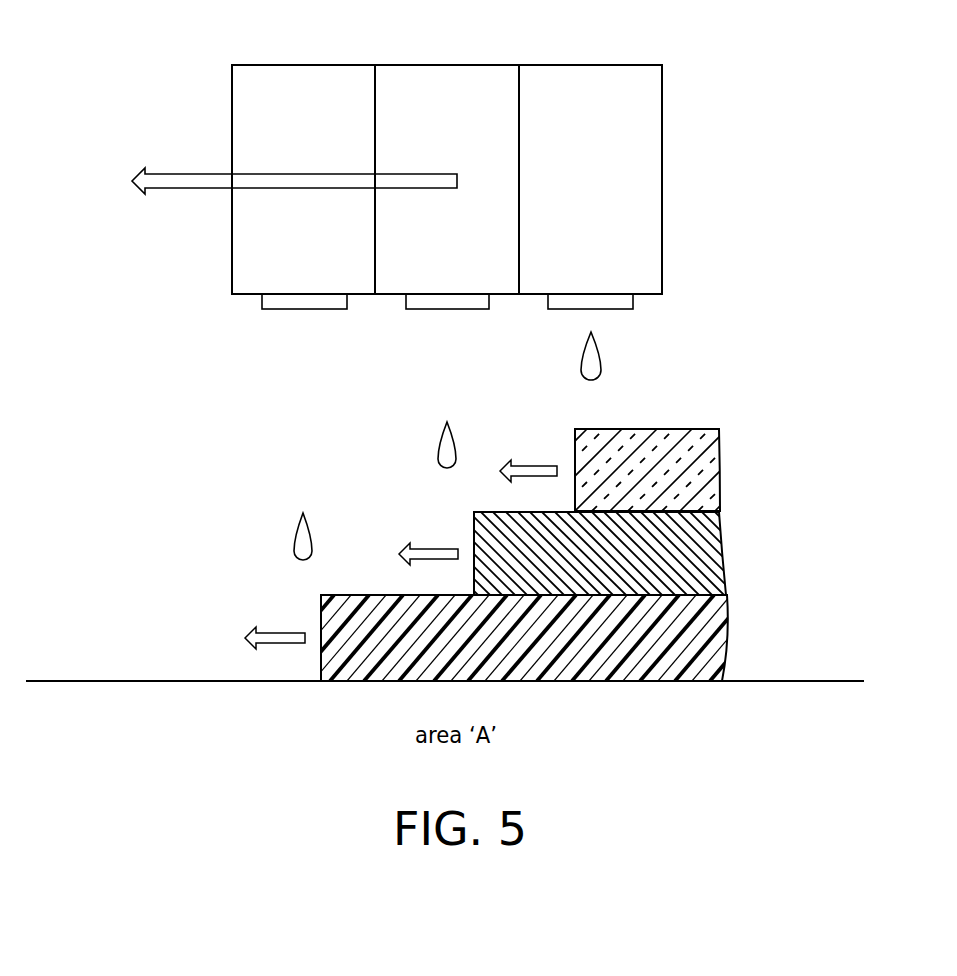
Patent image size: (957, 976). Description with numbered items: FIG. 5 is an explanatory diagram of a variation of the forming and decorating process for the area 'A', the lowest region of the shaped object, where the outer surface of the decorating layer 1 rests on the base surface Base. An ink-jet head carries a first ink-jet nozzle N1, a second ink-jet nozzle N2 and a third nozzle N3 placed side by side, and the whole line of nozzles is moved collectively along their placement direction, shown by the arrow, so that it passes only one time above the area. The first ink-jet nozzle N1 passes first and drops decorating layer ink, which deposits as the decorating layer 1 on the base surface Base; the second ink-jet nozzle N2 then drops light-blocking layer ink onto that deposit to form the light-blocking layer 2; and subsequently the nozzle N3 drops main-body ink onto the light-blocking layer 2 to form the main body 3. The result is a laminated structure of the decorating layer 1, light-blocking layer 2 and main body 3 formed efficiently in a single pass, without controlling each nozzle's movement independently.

The decorating layer 1 is at (700, 639).
The light-blocking layer 2 is at (700, 556).
The main body 3 is at (700, 472).
The first ink-jet nozzle N1 is at (302, 80).
The second ink-jet nozzle N2 is at (445, 80).
The third ink-jet nozzle N3 is at (588, 80).
The base surface Base is at (820, 681).